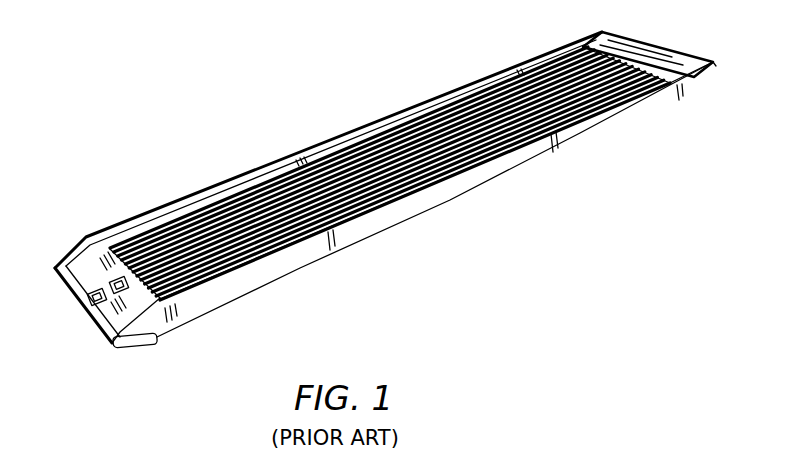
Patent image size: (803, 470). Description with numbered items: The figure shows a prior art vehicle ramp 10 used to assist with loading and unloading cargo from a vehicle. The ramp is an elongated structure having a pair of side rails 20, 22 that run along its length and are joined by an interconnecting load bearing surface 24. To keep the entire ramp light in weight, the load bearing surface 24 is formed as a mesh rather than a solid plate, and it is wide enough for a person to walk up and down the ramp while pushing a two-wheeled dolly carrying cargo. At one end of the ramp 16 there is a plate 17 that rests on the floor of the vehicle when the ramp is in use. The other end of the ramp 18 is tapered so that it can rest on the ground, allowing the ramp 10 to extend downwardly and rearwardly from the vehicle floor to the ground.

The ramp 10 is at (193, 115).
The one end of the ramp 16 is at (670, 35).
The plate 17 is at (715, 67).
The other end of the ramp 18 is at (66, 309).
The side rail 20 is at (407, 111).
The side rail 22 is at (423, 213).
The load bearing surface 24 is at (478, 90).